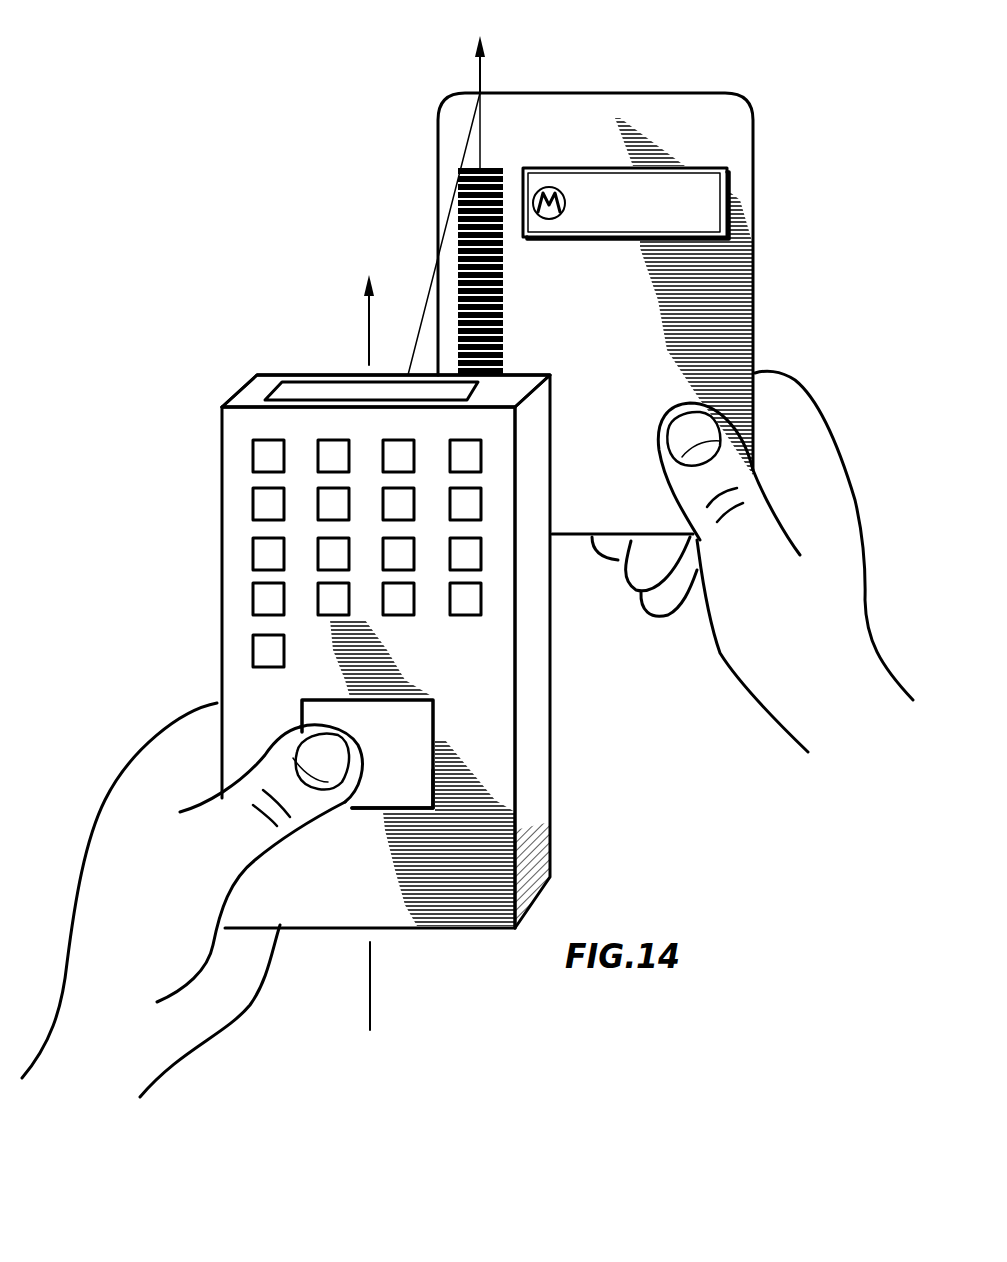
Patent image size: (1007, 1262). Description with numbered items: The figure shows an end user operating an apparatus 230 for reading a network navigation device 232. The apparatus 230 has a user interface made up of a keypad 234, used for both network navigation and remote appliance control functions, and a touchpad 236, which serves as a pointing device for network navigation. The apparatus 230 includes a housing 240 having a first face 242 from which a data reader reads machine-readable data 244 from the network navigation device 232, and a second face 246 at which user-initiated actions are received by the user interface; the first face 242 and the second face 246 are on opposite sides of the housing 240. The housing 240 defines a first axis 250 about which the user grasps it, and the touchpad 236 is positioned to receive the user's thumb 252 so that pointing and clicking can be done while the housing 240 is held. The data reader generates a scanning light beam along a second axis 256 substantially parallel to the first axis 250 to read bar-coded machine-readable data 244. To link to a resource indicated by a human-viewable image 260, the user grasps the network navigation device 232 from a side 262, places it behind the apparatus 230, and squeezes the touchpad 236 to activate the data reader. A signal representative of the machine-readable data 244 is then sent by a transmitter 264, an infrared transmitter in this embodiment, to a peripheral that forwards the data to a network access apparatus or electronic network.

The apparatus 230 is at (550, 853).
The network navigation device 232 is at (754, 133).
The keypad 234 is at (240, 503).
The touchpad 236 is at (435, 740).
The housing 240 is at (238, 390).
The first face 242 is at (277, 375).
The machine-readable data 244 is at (494, 168).
The second face 246 is at (235, 428).
The first axis 250 is at (372, 294).
The thumb 252 is at (358, 762).
The second axis 256 is at (484, 62).
The human-viewable image 260 is at (730, 188).
The side 262 is at (754, 247).
The transmitter 264 is at (318, 388).